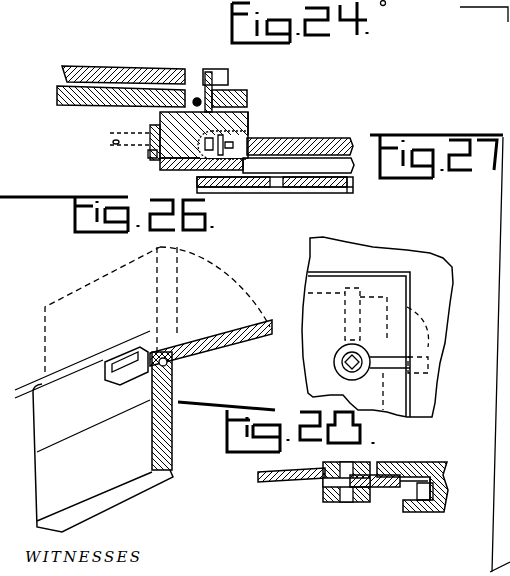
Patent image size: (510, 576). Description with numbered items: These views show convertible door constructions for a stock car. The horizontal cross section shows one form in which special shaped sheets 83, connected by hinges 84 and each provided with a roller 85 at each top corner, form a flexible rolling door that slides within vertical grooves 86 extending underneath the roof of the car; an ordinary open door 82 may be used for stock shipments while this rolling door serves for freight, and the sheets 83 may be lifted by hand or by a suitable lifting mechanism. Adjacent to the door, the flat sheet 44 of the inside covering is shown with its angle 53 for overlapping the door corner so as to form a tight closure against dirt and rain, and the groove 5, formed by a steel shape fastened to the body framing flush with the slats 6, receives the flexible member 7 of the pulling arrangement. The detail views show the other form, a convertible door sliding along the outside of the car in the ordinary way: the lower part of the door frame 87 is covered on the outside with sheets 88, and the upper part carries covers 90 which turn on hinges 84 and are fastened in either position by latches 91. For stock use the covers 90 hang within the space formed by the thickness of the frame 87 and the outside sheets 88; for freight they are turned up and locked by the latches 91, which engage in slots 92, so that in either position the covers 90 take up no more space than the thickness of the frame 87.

In FIG. 24, the sheet 44 is at (100, 66).
In FIG. 24, the groove 5 is at (188, 94).
In FIG. 24, the slat 6 is at (102, 106).
In FIG. 24, the angle 53 is at (232, 74).
In FIG. 24, the flexible member 7 is at (247, 107).
In FIG. 24, the roller 85 is at (263, 131).
In FIG. 24, the special shaped sheet 83 is at (300, 135).
In FIG. 24, the vertical groove 86 is at (157, 157).
In FIG. 24, the open door 82 is at (307, 187).
In FIG. 27, the door frame 87 is at (430, 283).
In FIG. 28, the door frame 87 is at (433, 512).
In FIG. 26, the cover 90 is at (207, 347).
In FIG. 27, the cover 90 is at (359, 344).
In FIG. 28, the cover 90 is at (268, 482).
In FIG. 27, the latch 91 is at (342, 363).
In FIG. 28, the latch 91 is at (327, 497).
In FIG. 27, the slot 92 is at (420, 345).
In FIG. 28, the slot 92 is at (443, 462).
In FIG. 26, the hinge 84 is at (115, 368).
In FIG. 26, the sheet 88 is at (152, 441).